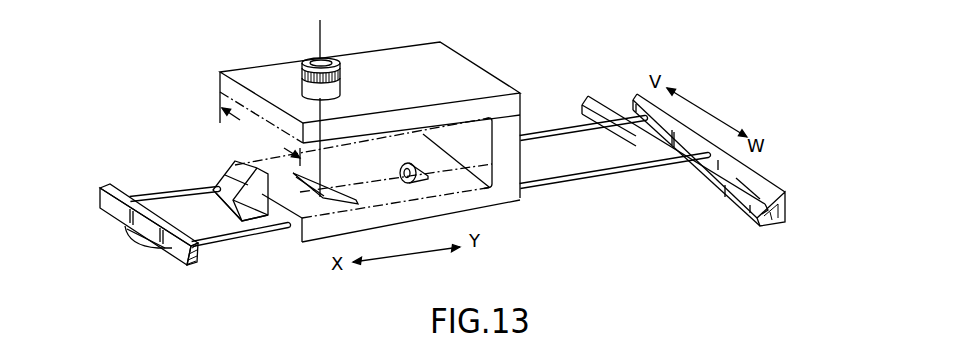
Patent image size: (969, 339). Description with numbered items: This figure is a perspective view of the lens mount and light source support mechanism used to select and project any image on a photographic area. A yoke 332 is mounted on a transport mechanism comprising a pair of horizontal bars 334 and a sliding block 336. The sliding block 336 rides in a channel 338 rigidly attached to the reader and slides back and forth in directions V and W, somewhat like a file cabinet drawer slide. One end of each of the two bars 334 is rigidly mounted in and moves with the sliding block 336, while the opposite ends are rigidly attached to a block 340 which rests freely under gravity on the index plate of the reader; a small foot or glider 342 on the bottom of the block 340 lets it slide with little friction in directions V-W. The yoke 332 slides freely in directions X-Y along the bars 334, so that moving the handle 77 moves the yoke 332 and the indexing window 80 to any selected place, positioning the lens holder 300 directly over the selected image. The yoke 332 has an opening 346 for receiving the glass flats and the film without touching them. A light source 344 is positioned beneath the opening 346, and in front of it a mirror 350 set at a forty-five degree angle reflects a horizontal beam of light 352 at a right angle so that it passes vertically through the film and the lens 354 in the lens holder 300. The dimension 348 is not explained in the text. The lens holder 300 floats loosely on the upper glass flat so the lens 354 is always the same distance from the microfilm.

The handle 77 is at (237, 173).
The window 80 is at (222, 212).
The lens holder 300 is at (341, 80).
The yoke 332 is at (360, 50).
The horizontal bars 334 is at (163, 193).
The sliding block 336 is at (735, 162).
The channel 338 is at (612, 95).
The block 340 is at (107, 200).
The foot or glider 342 is at (138, 242).
The light source 344 is at (428, 178).
The opening 346 is at (490, 133).
The offset dimension 348 is at (261, 137).
The mirror 350 is at (333, 205).
The beam of light 352 is at (380, 178).
The lens 354 is at (313, 57).